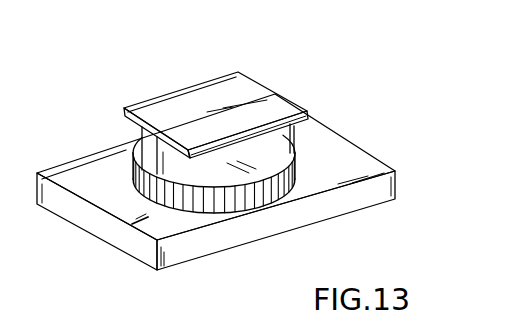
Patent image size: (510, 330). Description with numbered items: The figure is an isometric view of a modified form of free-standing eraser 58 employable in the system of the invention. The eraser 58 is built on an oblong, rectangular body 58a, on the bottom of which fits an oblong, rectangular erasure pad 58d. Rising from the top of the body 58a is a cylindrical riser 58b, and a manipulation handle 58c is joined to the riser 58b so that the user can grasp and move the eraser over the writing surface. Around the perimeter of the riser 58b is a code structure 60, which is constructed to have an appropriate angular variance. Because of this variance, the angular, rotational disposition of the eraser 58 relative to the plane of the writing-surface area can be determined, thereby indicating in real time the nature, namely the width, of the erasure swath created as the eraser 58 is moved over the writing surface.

The eraser 58 is at (223, 117).
The body 58a is at (259, 195).
The cylindrical riser 58b is at (223, 152).
The manipulation handle 58c is at (280, 48).
The erasure pad 58d is at (219, 252).
The code structure 60 is at (125, 165).